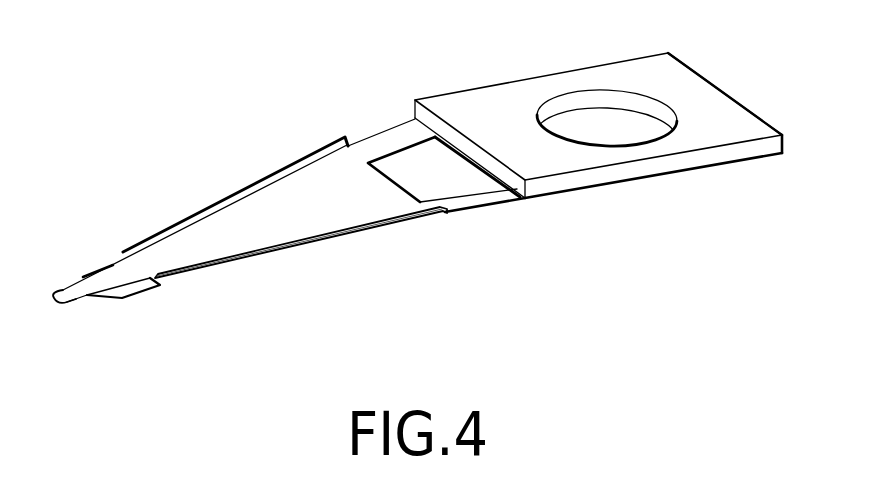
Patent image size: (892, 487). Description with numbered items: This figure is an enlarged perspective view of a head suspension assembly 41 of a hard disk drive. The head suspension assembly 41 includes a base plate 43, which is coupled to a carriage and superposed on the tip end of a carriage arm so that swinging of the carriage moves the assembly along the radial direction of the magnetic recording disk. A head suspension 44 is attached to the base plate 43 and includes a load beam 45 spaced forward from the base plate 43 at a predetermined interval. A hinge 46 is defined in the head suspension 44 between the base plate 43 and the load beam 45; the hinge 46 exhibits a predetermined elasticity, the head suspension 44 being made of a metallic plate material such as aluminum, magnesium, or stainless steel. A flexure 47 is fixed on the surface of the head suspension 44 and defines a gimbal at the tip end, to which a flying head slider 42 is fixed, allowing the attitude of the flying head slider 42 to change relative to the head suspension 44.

The head suspension assembly 41 is at (202, 127).
The flying head slider 42 is at (135, 300).
The base plate 43 is at (696, 80).
The head suspension 44 is at (335, 243).
The load beam 45 is at (228, 266).
The hinge 46 is at (382, 131).
The flexure 47 is at (96, 272).